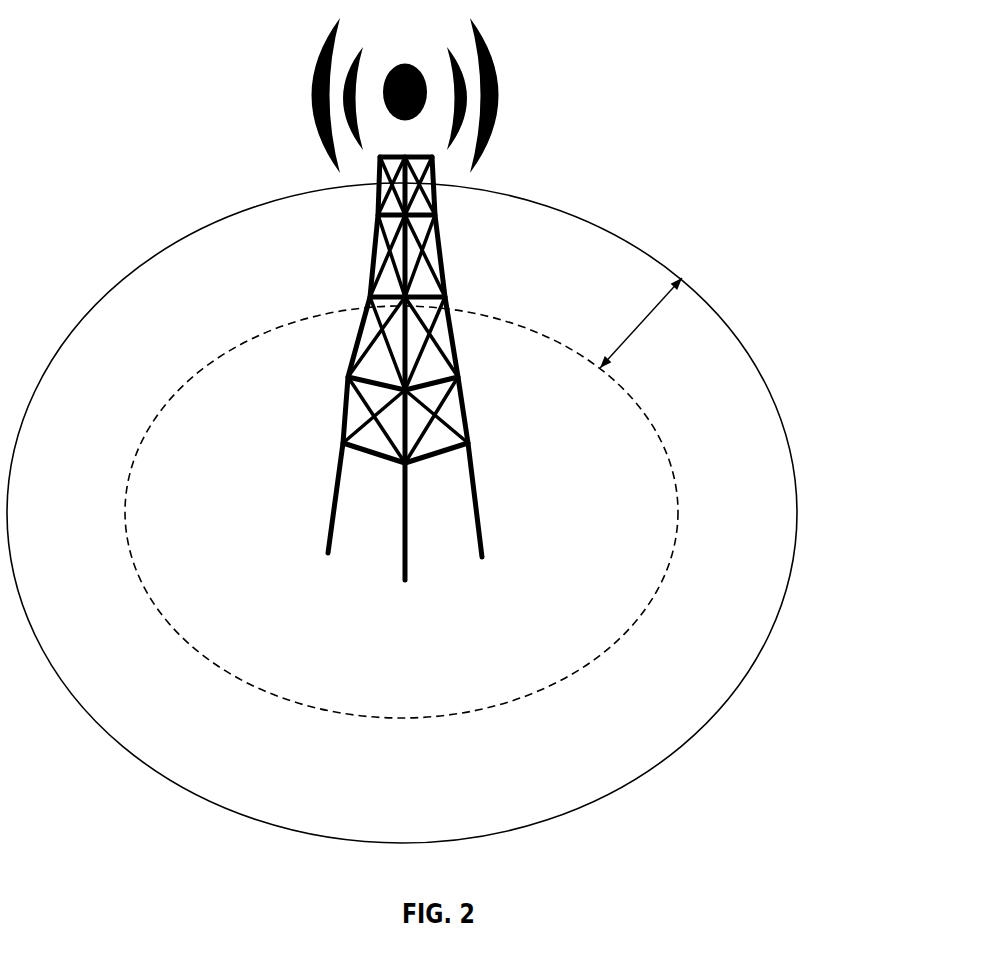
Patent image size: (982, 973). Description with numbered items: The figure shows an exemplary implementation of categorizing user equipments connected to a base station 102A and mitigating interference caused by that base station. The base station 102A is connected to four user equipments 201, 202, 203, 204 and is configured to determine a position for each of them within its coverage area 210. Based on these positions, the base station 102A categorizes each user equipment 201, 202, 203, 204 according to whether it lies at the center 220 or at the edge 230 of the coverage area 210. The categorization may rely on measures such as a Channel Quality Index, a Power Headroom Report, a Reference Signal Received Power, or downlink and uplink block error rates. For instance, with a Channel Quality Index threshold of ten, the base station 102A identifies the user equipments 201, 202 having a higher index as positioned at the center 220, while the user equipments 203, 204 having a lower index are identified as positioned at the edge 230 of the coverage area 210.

The base station 102A is at (440, 238).
The coverage area 210 is at (762, 372).
The center of the coverage area 220 is at (673, 472).
The edge of the coverage area 230 is at (658, 311).
The user equipment 201 is at (347, 377).
The user equipment 202 is at (402, 543).
The user equipment 203 is at (468, 417).
The user equipment 204 is at (485, 522).